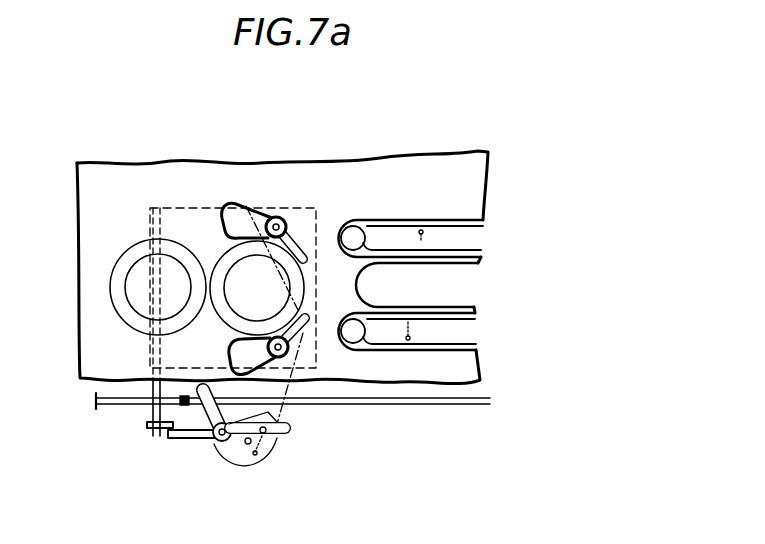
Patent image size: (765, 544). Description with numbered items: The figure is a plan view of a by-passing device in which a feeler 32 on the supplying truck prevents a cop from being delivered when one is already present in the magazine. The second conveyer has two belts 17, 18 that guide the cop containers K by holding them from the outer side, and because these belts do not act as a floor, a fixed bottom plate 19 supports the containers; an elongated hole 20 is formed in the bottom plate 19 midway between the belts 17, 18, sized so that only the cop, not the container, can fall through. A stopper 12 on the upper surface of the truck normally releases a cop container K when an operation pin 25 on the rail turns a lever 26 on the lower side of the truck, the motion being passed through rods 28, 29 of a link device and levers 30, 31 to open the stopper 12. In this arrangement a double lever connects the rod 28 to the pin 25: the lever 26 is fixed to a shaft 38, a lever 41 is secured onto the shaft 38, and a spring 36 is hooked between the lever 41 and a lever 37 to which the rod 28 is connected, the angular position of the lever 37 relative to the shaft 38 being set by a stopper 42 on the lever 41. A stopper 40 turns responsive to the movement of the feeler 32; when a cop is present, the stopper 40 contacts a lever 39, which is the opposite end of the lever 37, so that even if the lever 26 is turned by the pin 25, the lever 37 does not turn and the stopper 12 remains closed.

The stopper 12 is at (298, 210).
The belt 17 is at (470, 222).
The belt 18 is at (460, 318).
The fixed bottom plate 19 is at (471, 156).
The hole 20 is at (442, 286).
The operation pin 25 is at (157, 385).
The lever 26 is at (153, 410).
The rod 28 is at (290, 422).
The rod 29 is at (318, 256).
The lever 30 is at (316, 332).
The lever 31 is at (246, 205).
The feeler 32 is at (160, 207).
The spring 36 is at (280, 433).
The lever 37 is at (292, 436).
The shaft 38 is at (216, 441).
The lever 39 is at (181, 440).
The stopper 40 is at (157, 432).
The lever 41 is at (241, 458).
The stopper 42 is at (257, 456).
The cop container K is at (204, 296).